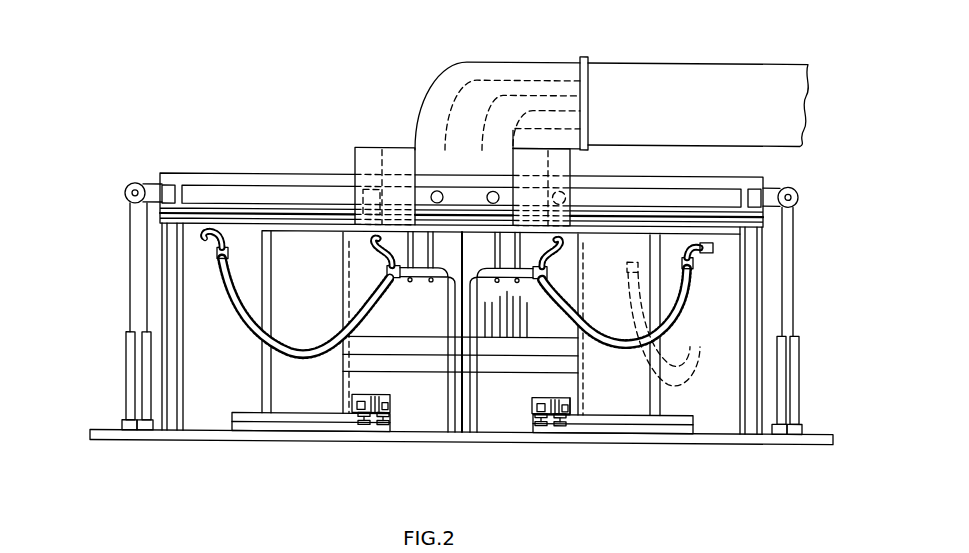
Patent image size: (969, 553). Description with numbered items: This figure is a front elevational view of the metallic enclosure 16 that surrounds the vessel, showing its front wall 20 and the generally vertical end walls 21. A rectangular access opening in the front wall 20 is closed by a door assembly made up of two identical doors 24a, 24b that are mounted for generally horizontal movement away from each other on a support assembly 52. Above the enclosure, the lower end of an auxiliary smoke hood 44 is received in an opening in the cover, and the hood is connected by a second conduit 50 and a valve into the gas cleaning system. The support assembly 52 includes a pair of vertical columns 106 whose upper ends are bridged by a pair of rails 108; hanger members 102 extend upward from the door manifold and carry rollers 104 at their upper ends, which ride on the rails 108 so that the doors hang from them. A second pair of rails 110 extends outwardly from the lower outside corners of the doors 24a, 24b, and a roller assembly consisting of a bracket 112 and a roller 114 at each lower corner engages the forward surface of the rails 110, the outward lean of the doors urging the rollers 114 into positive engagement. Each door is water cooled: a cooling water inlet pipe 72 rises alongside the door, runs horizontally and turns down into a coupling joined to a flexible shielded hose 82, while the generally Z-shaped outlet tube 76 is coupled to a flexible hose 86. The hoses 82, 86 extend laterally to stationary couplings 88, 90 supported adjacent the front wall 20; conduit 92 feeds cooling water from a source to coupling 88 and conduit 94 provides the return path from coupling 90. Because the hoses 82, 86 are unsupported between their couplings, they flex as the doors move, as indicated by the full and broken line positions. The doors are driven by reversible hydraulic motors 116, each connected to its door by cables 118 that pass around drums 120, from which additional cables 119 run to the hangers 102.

The enclosure 16 is at (322, 451).
The front wall 20 is at (615, 259).
The end walls 21 is at (263, 287).
The door 24a is at (502, 443).
The door 24b is at (475, 444).
The auxiliary smoke hood 44 is at (470, 128).
The second conduit 50 is at (667, 60).
The support assembly 52 is at (461, 171).
The cooling water inlet pipe 72 is at (447, 338).
The outlet tube 76 is at (462, 263).
The flexible shielded hose 82 is at (264, 344).
The flexible hose 86 is at (457, 335).
The stationary coupling 88 is at (483, 277).
The stationary coupling 90 is at (228, 252).
The conduit 92 is at (407, 205).
The conduit 94 is at (202, 233).
The hanger members 102 is at (497, 210).
The rollers 104 is at (433, 200).
The vertical columns 106 is at (173, 398).
The rails 108 is at (263, 203).
The rails 110 is at (267, 426).
The bracket 112 is at (533, 409).
The roller 114 is at (586, 473).
The reversible hydraulic motors 116 is at (146, 391).
The cables 118 is at (147, 300).
The cables 119 is at (162, 182).
The drums 120 is at (125, 193).